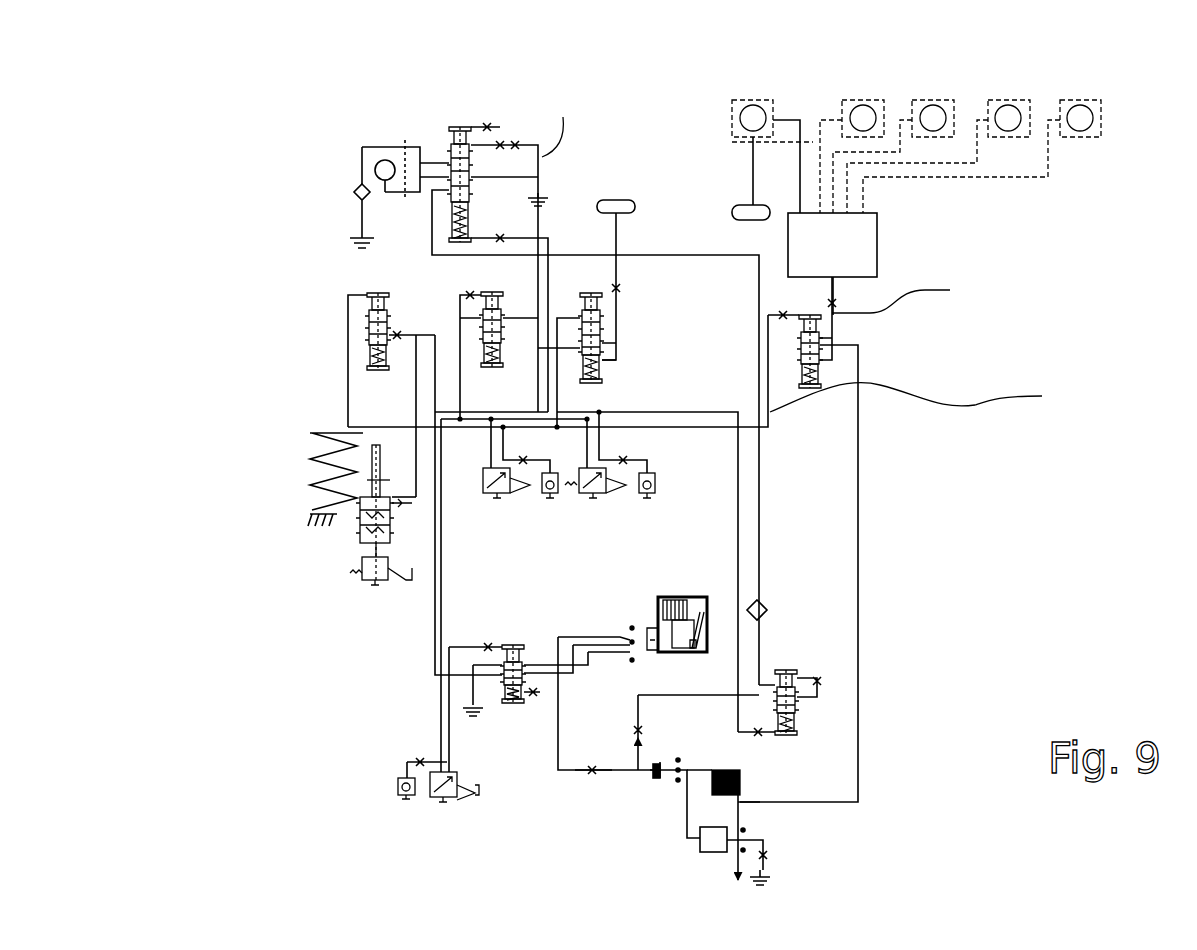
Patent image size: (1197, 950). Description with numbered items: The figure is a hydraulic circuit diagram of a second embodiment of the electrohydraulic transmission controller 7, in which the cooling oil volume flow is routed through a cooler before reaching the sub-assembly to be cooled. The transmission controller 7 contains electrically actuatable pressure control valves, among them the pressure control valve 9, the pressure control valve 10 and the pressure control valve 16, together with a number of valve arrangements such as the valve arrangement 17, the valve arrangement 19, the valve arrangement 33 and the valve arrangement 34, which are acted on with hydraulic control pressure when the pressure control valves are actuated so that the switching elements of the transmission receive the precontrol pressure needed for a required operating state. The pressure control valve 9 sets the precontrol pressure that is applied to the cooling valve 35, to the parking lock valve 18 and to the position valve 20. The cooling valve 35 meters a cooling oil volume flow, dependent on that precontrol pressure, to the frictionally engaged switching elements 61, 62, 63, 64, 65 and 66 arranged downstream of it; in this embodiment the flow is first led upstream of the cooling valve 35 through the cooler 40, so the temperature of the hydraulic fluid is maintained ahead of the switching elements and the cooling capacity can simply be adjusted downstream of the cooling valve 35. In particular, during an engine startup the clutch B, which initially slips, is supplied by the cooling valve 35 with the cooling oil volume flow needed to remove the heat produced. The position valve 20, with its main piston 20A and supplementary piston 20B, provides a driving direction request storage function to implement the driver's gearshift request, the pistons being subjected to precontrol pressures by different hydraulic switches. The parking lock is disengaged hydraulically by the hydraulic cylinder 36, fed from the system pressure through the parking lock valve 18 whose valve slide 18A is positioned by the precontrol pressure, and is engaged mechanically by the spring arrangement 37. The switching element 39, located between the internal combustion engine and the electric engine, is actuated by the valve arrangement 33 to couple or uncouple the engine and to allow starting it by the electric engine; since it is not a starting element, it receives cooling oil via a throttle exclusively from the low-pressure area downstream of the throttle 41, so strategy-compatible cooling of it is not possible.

The electrohydraulic transmission controller 7 is at (217, 208).
The pressure control valve 9 is at (497, 480).
The pressure control valve 10 is at (650, 495).
The pressure control valve 16 is at (455, 800).
The valve arrangement 17 is at (440, 120).
The parking lock valve 18 is at (356, 293).
The valve slide 18A is at (368, 315).
The valve arrangement 19 is at (496, 284).
The position valve 20 is at (586, 282).
The main piston 20A is at (617, 298).
The supplementary piston 20B is at (597, 325).
The valve arrangement 33 is at (513, 705).
The valve arrangement 34 is at (793, 680).
The cooling valve 35 is at (858, 345).
The hydraulic cylinder 36 is at (350, 530).
The spring arrangement 37 is at (325, 462).
The switching element 39 is at (700, 600).
The cooler 40 is at (742, 775).
The throttle 41 is at (592, 773).
The switching element B is at (753, 105).
The switching element 61 is at (848, 125).
The switching element 64 is at (865, 110).
The switching element 63 is at (906, 125).
The switching element 65 is at (935, 108).
The switching element 66 is at (1010, 110).
The switching element 62 is at (1082, 110).